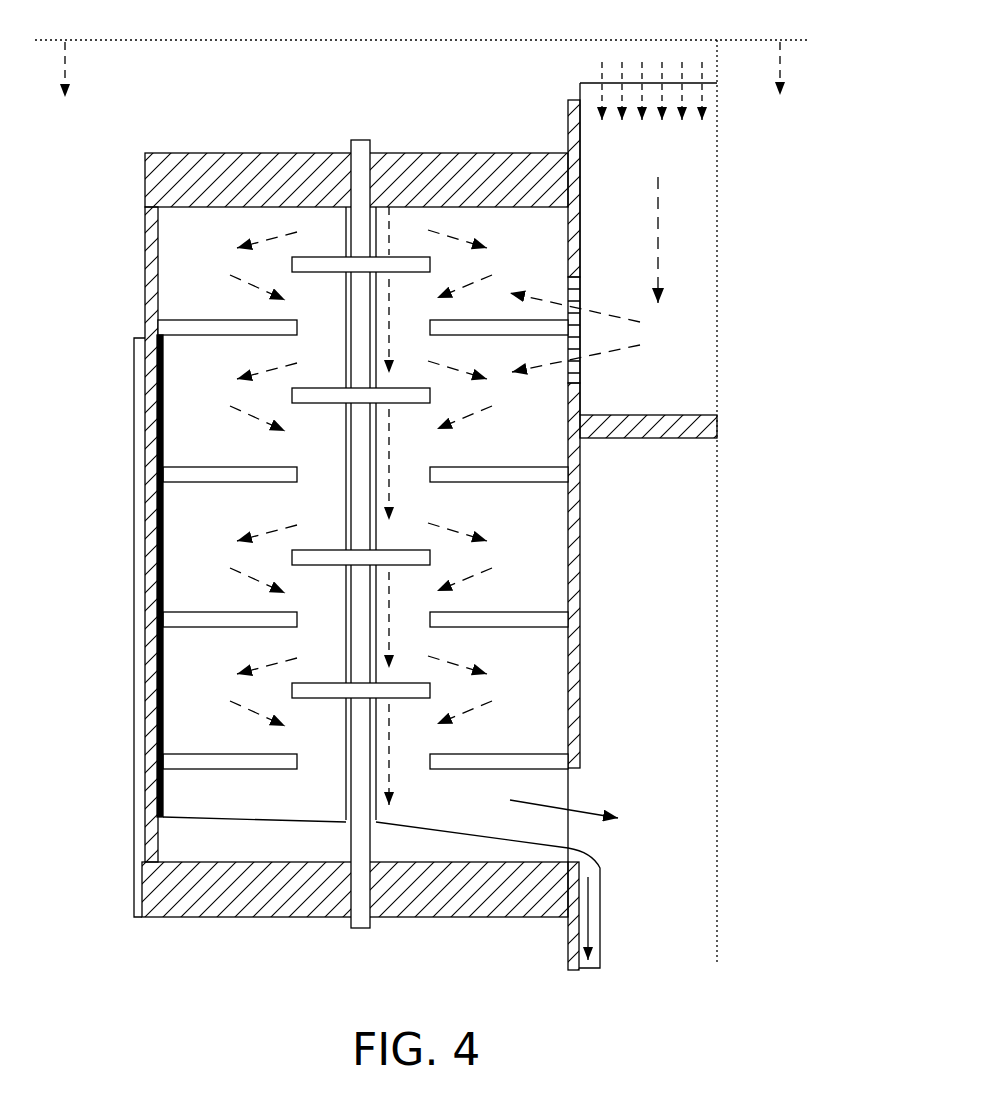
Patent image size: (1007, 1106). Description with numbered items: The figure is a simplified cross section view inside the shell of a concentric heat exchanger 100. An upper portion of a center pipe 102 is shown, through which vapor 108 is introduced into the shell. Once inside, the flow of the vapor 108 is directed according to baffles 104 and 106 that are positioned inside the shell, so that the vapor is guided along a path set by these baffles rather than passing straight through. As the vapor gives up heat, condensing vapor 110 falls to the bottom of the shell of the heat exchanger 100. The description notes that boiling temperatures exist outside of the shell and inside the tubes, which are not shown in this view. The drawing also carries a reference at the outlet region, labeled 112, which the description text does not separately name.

The heat exchanger 100 is at (145, 291).
The center pipe 102 is at (717, 161).
The baffle 104 is at (195, 335).
The baffle 106 is at (388, 257).
The vapor 108 is at (658, 226).
The condensing vapor 110 is at (393, 790).
The outlet discharge 112 is at (590, 810).